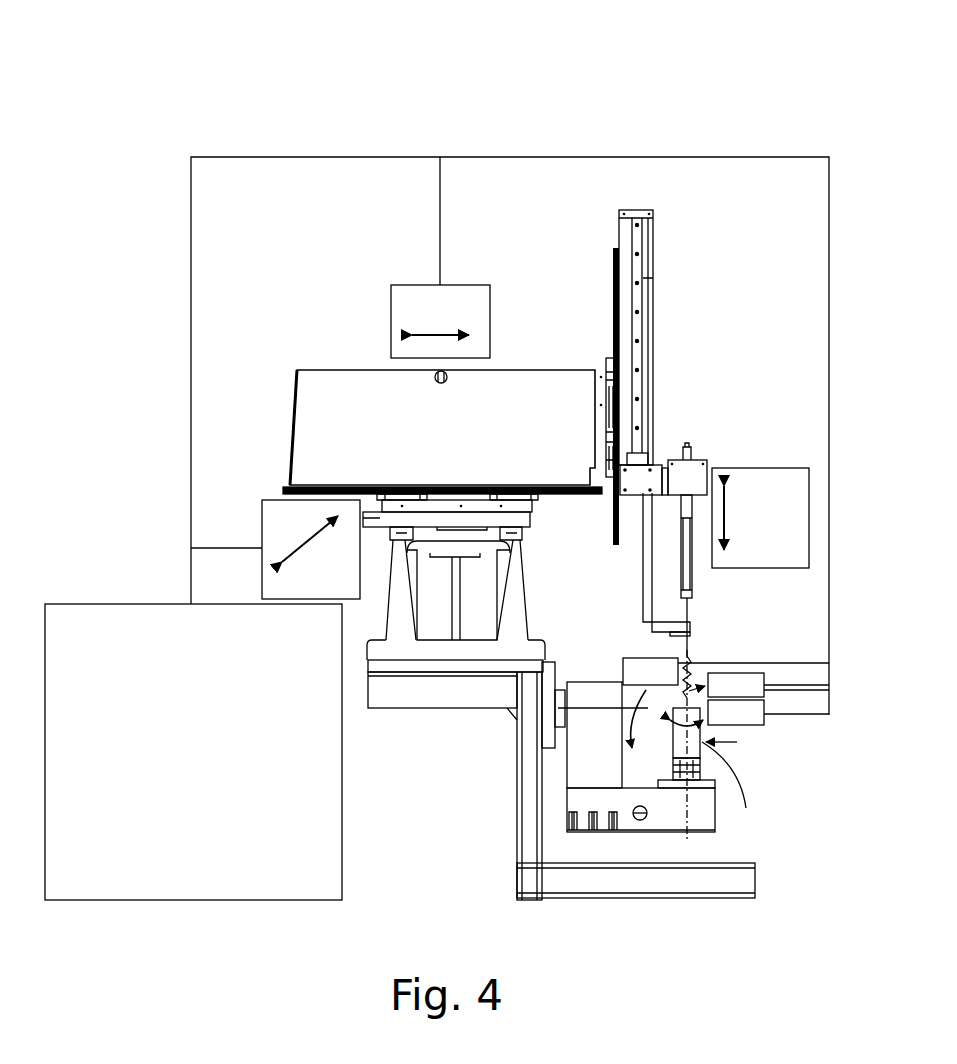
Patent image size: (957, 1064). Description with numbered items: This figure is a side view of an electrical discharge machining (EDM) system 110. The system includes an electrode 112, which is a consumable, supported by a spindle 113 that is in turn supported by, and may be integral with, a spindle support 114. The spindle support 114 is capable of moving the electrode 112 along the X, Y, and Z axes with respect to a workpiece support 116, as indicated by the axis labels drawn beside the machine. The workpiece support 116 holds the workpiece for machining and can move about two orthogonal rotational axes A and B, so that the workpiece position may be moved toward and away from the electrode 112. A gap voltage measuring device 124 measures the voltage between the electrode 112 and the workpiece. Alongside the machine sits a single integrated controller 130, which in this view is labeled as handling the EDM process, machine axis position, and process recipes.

The electrical discharge machining (EDM) system 110 is at (802, 112).
The spindle support 114 is at (585, 328).
The spindle 113 is at (694, 584).
The electrode 112 is at (688, 613).
The gap voltage measuring device 124 is at (765, 681).
The workpiece support 116 is at (660, 848).
The single integrated controller 130 is at (97, 602).